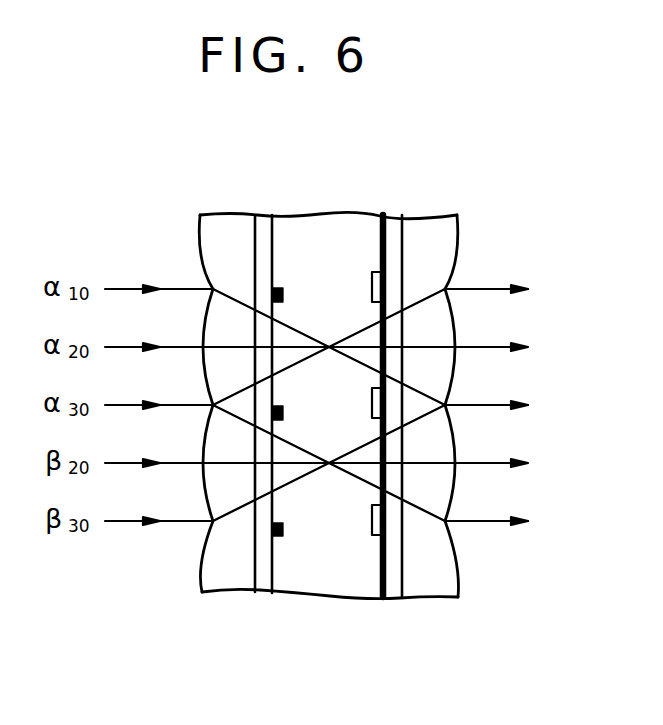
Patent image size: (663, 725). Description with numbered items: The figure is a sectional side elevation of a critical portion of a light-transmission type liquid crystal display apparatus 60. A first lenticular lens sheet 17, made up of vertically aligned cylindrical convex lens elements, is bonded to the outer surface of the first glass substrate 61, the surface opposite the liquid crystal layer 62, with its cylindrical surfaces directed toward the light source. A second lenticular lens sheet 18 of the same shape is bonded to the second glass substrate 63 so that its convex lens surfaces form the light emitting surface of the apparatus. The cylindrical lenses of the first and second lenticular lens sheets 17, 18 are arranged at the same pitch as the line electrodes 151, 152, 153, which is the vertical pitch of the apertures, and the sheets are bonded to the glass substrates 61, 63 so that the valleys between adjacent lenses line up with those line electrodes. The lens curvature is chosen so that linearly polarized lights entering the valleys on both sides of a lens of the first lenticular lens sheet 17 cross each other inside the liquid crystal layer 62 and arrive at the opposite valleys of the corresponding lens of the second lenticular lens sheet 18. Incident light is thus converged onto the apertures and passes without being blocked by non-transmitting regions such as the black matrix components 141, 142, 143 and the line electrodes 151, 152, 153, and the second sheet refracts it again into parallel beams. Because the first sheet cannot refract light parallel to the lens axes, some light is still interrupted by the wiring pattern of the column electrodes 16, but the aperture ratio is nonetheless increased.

The light transmission type liquid crystal display apparatus 60 is at (296, 210).
The first lenticular lens sheet 17 is at (215, 220).
The second lenticular lens sheet 18 is at (440, 588).
The first glass substrate 61 is at (260, 588).
The liquid crystal layer 62 is at (338, 590).
The second glass substrate 63 is at (393, 592).
The column electrodes 16 is at (389, 235).
The black matrix component 141 is at (275, 290).
The black matrix component 142 is at (273, 413).
The black matrix component 143 is at (285, 537).
The line electrode 151 is at (385, 288).
The line electrode 152 is at (384, 404).
The line electrode 153 is at (385, 522).